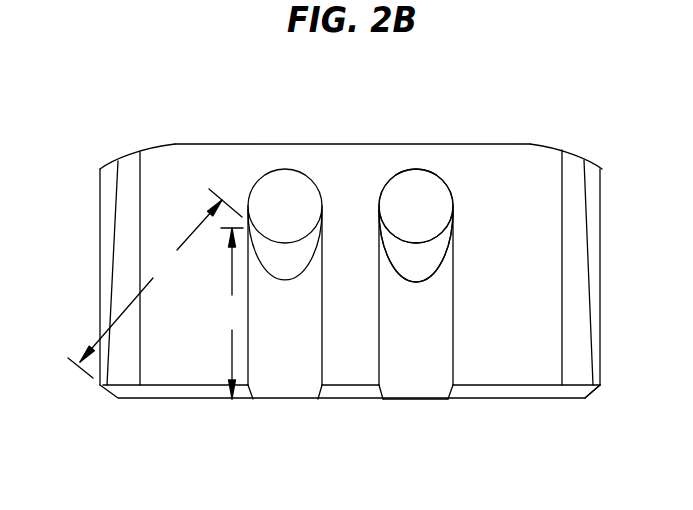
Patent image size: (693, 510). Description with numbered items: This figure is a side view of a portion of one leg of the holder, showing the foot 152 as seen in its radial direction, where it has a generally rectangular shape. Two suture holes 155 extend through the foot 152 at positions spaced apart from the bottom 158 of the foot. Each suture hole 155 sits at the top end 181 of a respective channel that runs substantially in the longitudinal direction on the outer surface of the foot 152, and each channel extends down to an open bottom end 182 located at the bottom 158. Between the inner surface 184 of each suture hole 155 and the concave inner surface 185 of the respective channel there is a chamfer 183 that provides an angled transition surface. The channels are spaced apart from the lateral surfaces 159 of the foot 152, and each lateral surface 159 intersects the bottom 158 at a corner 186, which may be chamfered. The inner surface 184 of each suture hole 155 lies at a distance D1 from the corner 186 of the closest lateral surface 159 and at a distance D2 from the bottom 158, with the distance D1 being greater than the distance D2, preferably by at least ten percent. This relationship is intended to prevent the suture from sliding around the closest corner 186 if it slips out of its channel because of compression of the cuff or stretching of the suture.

The foot 152 is at (183, 168).
The suture hole 155 is at (425, 200).
The bottom 158 is at (513, 400).
The lateral surface 159 is at (602, 325).
The top end 181 is at (417, 169).
The open bottom end 182 is at (410, 388).
The chamfer 183 is at (418, 258).
The inner surface of suture hole 184 is at (419, 240).
The inner surface of channel 185 is at (395, 342).
The corner 186 is at (437, 313).
The distance D1 is at (155, 283).
The distance D2 is at (232, 313).